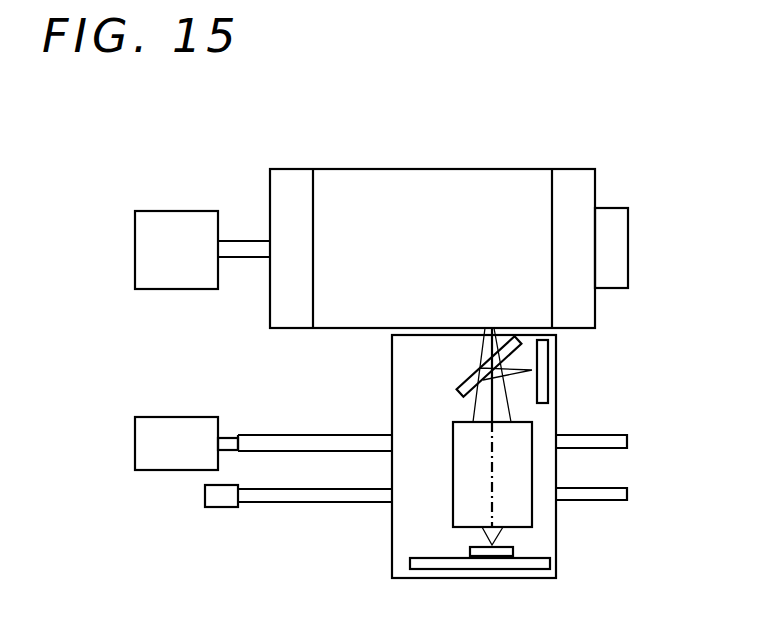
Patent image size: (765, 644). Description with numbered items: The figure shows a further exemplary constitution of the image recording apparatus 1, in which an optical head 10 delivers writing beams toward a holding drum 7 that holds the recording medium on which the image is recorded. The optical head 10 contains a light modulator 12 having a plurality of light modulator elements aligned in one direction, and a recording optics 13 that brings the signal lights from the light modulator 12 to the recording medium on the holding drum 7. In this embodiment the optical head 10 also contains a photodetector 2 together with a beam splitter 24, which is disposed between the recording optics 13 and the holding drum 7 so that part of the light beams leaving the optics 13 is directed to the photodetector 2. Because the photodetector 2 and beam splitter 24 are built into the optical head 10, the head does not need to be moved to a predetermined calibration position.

The image recording apparatus 1 is at (156, 128).
The holding drum 7 is at (573, 168).
The beam splitter 24 is at (466, 381).
The photodetector 2 is at (548, 370).
The recording optics 13 is at (532, 444).
The light modulator 12 is at (482, 546).
The optical head 10 is at (500, 578).